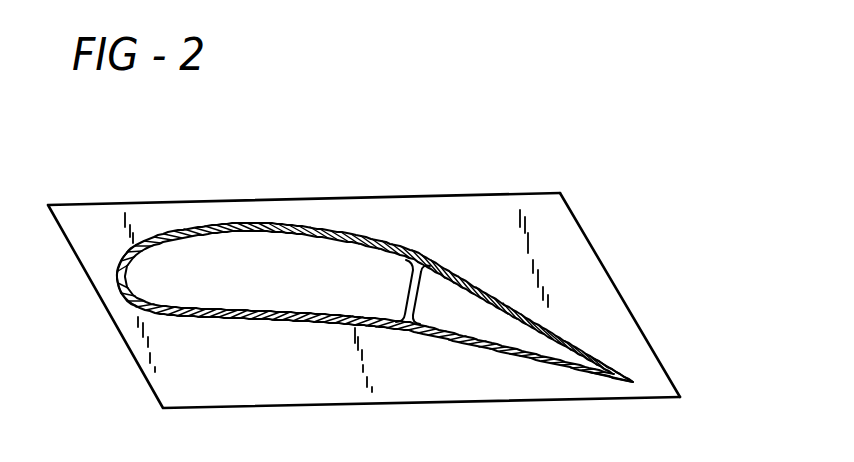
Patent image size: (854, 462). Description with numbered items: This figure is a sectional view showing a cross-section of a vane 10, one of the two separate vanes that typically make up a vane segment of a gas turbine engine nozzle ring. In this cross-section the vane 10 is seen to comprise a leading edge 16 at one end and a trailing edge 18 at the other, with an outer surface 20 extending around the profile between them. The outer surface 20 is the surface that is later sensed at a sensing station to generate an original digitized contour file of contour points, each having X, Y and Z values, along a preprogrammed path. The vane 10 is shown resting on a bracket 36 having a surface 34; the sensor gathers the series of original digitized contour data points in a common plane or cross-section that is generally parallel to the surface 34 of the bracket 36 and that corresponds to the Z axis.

The vane 10 is at (394, 253).
The leading edge 16 is at (128, 260).
The trailing edge 18 is at (620, 368).
The outer surface 20 is at (338, 230).
The surface 34 is at (602, 298).
The bracket 36 is at (668, 372).